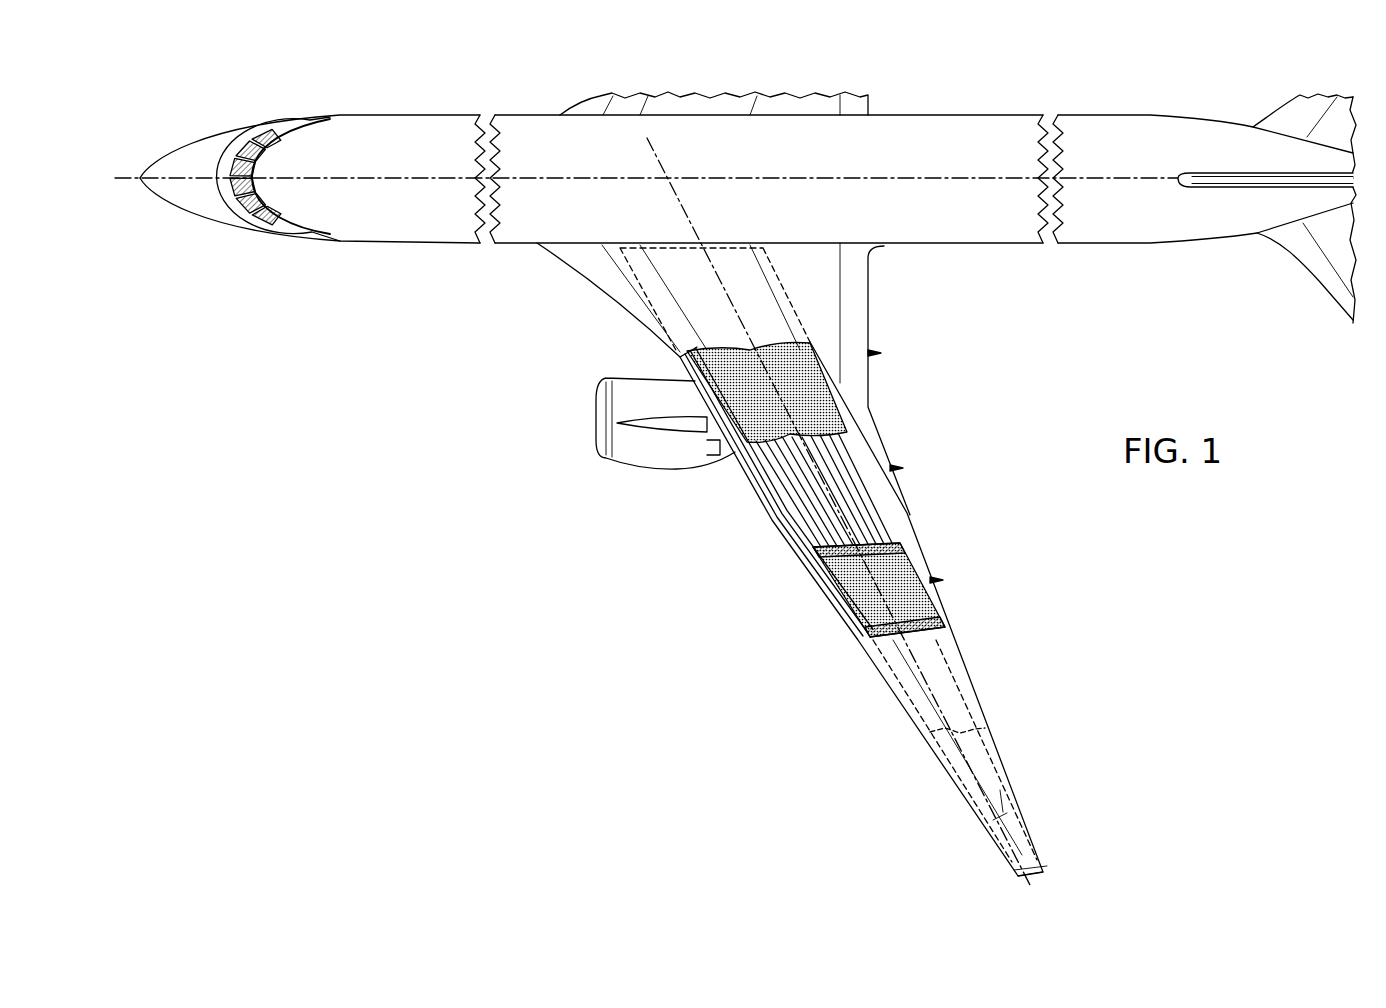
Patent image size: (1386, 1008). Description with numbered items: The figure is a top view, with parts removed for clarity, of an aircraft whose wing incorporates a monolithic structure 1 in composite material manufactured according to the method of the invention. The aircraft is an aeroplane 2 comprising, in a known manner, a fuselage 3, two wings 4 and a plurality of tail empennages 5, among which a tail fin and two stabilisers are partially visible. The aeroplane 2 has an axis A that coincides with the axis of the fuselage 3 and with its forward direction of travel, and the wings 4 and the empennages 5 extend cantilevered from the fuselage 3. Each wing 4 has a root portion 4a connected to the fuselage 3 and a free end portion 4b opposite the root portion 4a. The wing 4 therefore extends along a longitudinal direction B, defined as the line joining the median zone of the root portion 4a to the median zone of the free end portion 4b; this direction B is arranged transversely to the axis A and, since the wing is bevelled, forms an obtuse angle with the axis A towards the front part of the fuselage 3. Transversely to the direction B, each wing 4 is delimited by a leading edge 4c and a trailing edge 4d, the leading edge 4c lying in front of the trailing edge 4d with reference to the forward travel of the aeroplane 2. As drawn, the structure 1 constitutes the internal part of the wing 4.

The monolithic structure in composite material 1 is at (793, 462).
The aeroplane 2 is at (213, 243).
The fuselage 3 is at (528, 212).
The wing 4 is at (877, 92).
The root portion 4a is at (697, 102).
The free end portion 4b is at (1033, 853).
The leading edge 4c is at (777, 527).
The trailing edge 4d is at (957, 625).
The tail empennage 5 is at (1280, 112).
The axis A is at (360, 178).
The longitudinal direction B is at (928, 690).